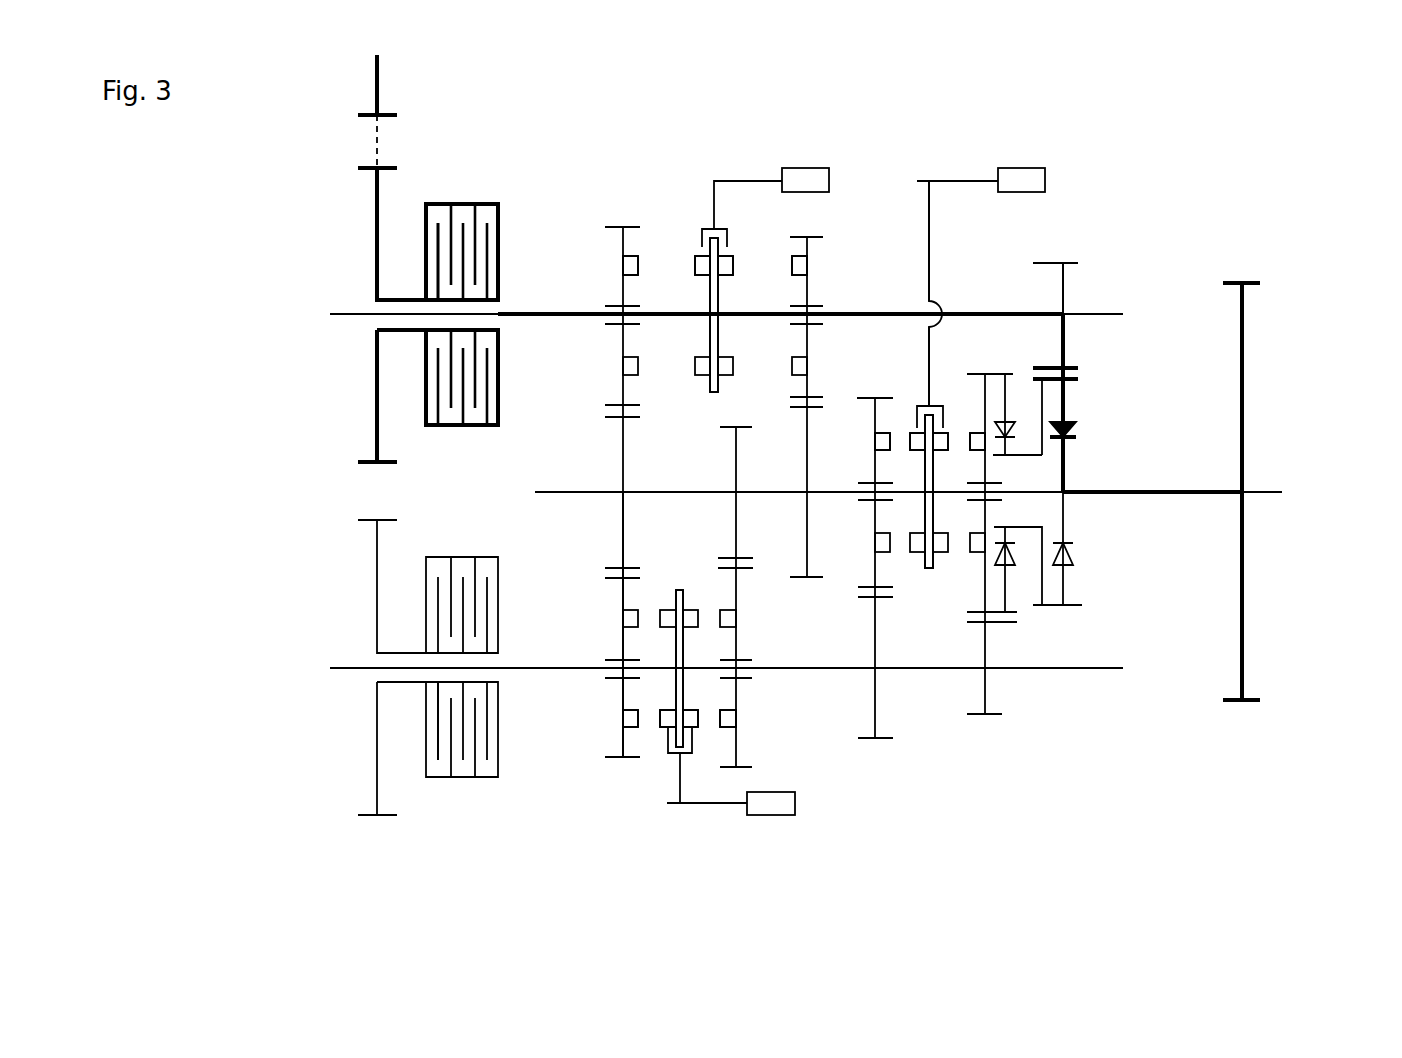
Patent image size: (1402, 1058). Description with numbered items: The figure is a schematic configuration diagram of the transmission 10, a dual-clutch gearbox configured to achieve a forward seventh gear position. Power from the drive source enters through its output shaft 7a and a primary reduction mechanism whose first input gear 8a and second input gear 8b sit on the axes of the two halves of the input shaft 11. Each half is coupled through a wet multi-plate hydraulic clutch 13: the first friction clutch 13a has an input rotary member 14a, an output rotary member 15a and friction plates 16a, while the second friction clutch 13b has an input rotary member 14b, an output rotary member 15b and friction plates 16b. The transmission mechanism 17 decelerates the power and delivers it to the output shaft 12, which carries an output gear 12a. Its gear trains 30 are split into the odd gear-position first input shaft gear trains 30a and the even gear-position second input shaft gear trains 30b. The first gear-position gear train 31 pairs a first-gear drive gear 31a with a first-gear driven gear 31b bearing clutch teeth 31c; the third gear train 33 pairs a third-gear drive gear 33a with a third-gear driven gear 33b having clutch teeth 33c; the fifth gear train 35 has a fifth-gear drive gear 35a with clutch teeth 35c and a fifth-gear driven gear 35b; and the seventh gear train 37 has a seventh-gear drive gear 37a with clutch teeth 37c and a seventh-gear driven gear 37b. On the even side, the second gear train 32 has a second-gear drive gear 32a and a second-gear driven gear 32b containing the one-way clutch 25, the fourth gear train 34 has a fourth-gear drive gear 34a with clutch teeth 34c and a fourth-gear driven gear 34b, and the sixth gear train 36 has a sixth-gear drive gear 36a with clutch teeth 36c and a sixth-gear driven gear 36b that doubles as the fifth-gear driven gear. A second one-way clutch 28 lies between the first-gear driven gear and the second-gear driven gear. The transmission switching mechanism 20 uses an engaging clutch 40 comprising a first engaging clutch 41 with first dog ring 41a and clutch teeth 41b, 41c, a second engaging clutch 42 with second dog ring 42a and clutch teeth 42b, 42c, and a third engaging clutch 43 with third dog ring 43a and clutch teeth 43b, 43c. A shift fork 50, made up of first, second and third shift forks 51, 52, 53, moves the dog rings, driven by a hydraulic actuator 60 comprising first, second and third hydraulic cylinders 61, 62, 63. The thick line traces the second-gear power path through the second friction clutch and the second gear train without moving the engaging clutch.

The output shaft 7a is at (362, 112).
The first input gear 8a is at (368, 817).
The second input gear 8b is at (362, 167).
The transmission 10 is at (1205, 200).
The input shaft 11 is at (352, 315).
The output shaft 12 is at (1265, 492).
The output gear 12a is at (1250, 279).
The clutch 13 is at (445, 491).
The first friction clutch 13a is at (458, 782).
The second friction clutch 13b is at (490, 160).
The input rotary member 14a is at (428, 685).
The input rotary member 14b is at (426, 290).
The output rotary member 15a is at (426, 777).
The output rotary member 15b is at (426, 207).
The friction plates 16a is at (426, 745).
The friction plates 16b is at (426, 247).
The transmission mechanism 17 is at (1127, 330).
The transmission switching mechanism 20 is at (952, 135).
The one-way clutch 25 is at (1077, 431).
The second one-way clutch 28 is at (1010, 420).
The gear mechanism 30 is at (1113, 192).
The gear-position first input shaft gear train 30a is at (1078, 704).
The gear-position second input shaft gear train 30b is at (1100, 265).
The first gear-position first input shaft gear train 31 is at (985, 858).
The first-gear drive gear 31a is at (1001, 714).
The first-gear driven gear 31b is at (1008, 612).
The clutch teeth 31c is at (984, 446).
The second gear-position second input shaft gear train 32 is at (1063, 112).
The second-gear drive gear 32a is at (1070, 263).
The second-gear driven gear 32b is at (1078, 375).
The third gear-position first input shaft gear train 33 is at (875, 858).
The third-gear drive gear 33a is at (881, 738).
The third-gear driven gear 33b is at (858, 398).
The clutch teeth 33c is at (877, 441).
The fourth gear-position second input shaft gear train 34 is at (807, 112).
The fourth-gear drive gear 34a is at (815, 237).
The fourth-gear driven gear 34b is at (814, 578).
The clutch teeth 34c is at (807, 265).
The fifth gear-position first input shaft gear train 35 is at (623, 858).
The fifth-gear drive gear 35a is at (612, 757).
The fifth-gear driven gear 35b is at (610, 568).
The clutch teeth 35c is at (623, 718).
The sixth gear-position second input shaft gear train 36 is at (623, 112).
The sixth-gear drive gear 36a is at (613, 227).
The sixth-gear driven gear 36b is at (622, 573).
The clutch teeth 36c is at (623, 266).
The seventh gear-position first input shaft gear train 37 is at (736, 858).
The seventh-gear drive gear 37a is at (746, 767).
The seventh-gear driven gear 37b is at (747, 556).
The clutch teeth 37c is at (736, 718).
The engaging clutch 40 is at (919, 576).
The first engaging clutch 41 is at (928, 575).
The first dog ring 41a is at (931, 568).
The clutch teeth 41b is at (946, 432).
The clutch teeth 41c is at (915, 434).
The second engaging clutch 42 is at (708, 381).
The second dog ring 42a is at (714, 395).
The clutch teeth 42b is at (733, 262).
The clutch teeth 42c is at (698, 262).
The third engaging clutch 43 is at (675, 600).
The third dog ring 43a is at (686, 598).
The clutch teeth 43b is at (694, 733).
The clutch teeth 43c is at (667, 729).
The shift fork 50 is at (931, 239).
The first shift fork 51 is at (929, 262).
The second shift fork 52 is at (712, 201).
The third shift fork 53 is at (667, 803).
The hydraulic actuator 60 is at (1006, 168).
The first hydraulic actuator 61 is at (1015, 168).
The second hydraulic actuator 62 is at (792, 168).
The third hydraulic actuator 63 is at (785, 816).